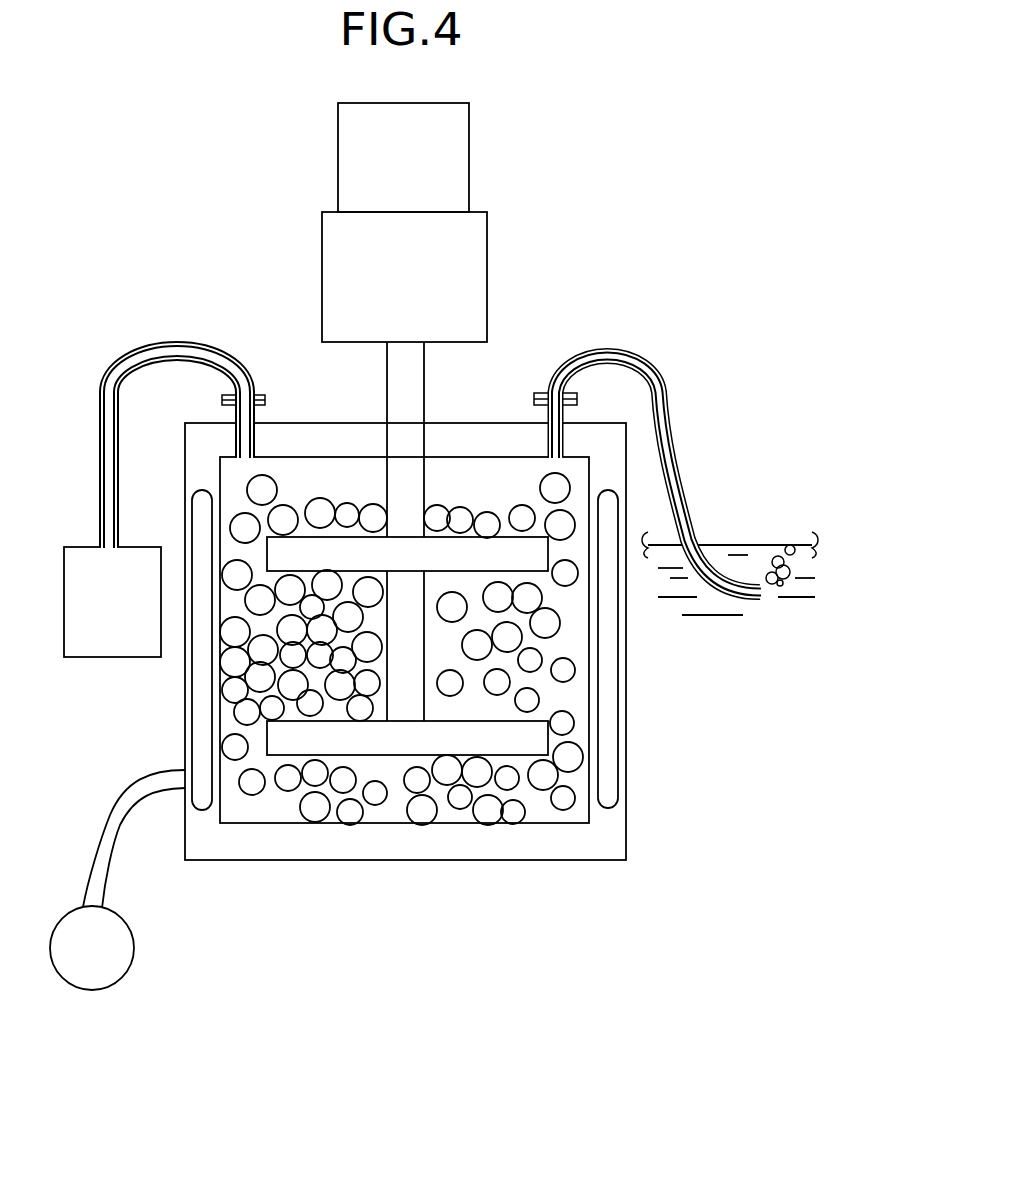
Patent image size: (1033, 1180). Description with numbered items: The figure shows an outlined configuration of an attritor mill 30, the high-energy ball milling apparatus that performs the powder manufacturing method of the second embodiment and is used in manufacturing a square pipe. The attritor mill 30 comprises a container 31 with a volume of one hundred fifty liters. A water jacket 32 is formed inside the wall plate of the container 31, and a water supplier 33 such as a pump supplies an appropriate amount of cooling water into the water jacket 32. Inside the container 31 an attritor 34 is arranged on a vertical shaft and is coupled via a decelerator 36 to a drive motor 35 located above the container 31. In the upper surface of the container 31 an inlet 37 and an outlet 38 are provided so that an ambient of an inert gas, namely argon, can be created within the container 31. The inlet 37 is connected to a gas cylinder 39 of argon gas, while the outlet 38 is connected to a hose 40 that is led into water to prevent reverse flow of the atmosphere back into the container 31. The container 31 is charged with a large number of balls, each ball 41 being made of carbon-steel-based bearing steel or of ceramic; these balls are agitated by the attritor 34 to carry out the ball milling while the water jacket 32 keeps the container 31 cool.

The attritor mill 30 is at (196, 181).
The container 31 is at (580, 848).
The water jacket 32 is at (613, 773).
The water supplier 33 is at (107, 977).
The attritor 34 is at (372, 732).
The drive motor 35 is at (462, 160).
The decelerator 36 is at (475, 248).
The inlet 37 is at (245, 423).
The outlet 38 is at (547, 388).
The gas cylinder 39 is at (95, 652).
The hose 40 is at (677, 420).
The ball 41 is at (262, 652).